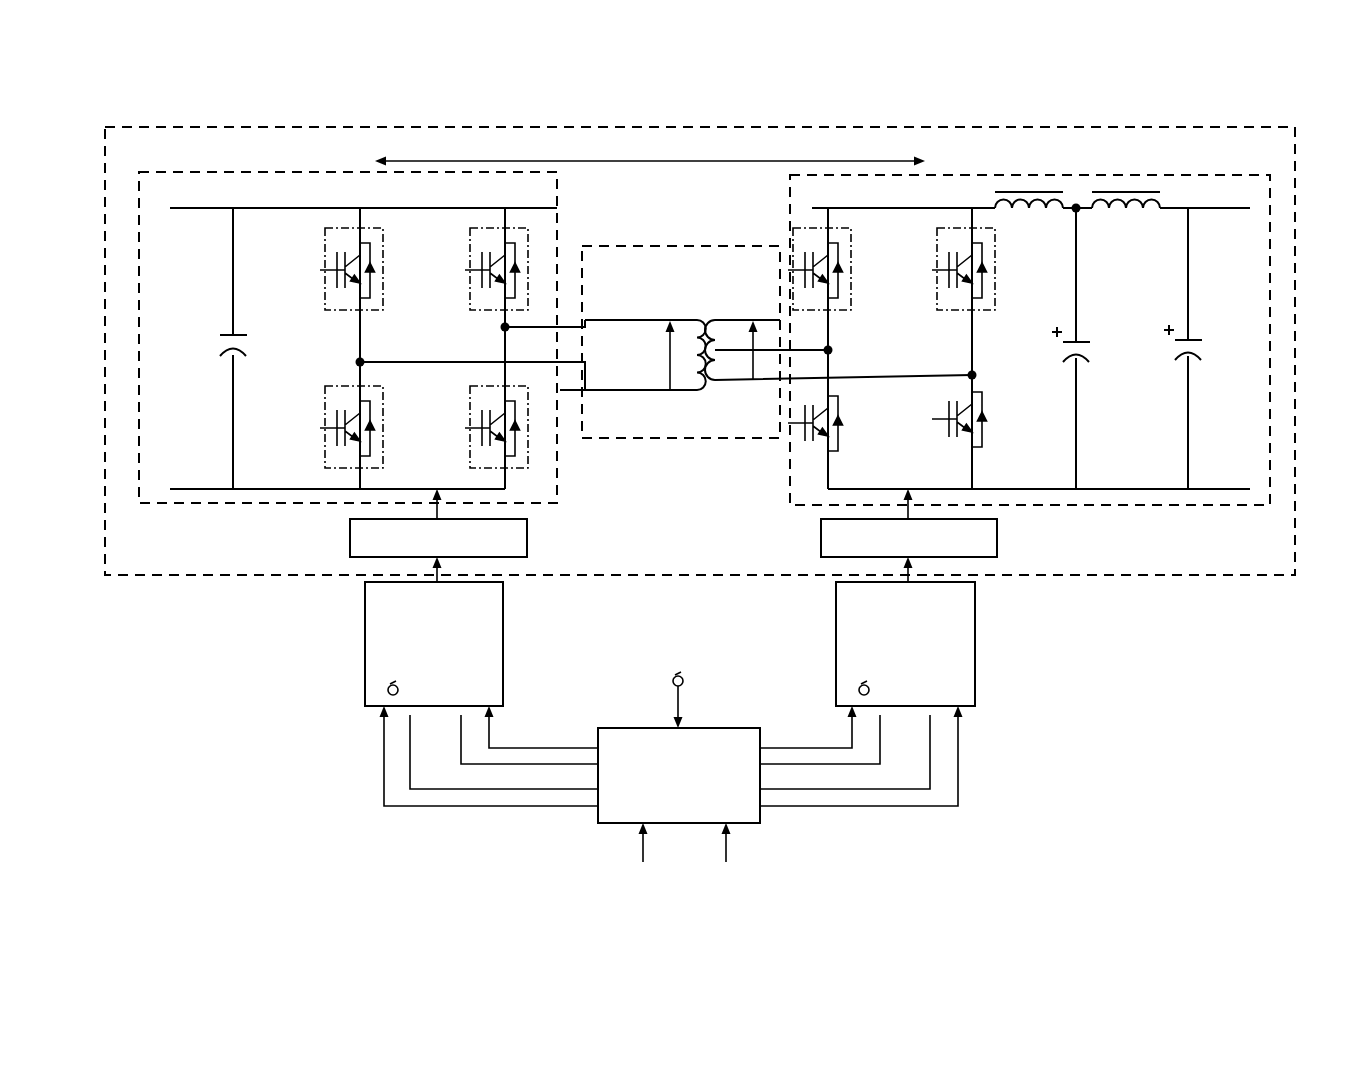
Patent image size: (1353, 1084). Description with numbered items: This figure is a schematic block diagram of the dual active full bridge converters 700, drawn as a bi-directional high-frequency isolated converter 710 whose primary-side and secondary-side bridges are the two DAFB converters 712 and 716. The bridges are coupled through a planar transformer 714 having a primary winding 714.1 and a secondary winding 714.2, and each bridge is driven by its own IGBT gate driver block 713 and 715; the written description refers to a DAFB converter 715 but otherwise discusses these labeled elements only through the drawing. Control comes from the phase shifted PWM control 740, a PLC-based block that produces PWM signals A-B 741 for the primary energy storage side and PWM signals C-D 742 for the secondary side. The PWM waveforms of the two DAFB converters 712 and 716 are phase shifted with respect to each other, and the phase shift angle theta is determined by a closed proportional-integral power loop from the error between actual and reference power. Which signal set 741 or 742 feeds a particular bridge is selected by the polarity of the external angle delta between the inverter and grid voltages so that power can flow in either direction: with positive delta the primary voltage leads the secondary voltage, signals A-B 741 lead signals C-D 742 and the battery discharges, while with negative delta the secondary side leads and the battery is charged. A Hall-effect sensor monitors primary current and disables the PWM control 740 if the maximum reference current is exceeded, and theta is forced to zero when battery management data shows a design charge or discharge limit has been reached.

The Dual Active Full Bridge (DAFB) converters 700 is at (212, 847).
The bi-directional HF isolated IGBT-based phase-shifted DC-DC converter 710 is at (280, 127).
The DAFB converter (primary energy storage side) 712 is at (202, 503).
The primary-side IGBT gate drivers 713 is at (350, 548).
The planar transformer 714 is at (697, 243).
The transformer primary winding 714.1 is at (643, 312).
The transformer secondary winding 714.2 is at (738, 312).
The DAFB converter 715 is at (992, 557).
The DAFB converter (secondary side) 716 is at (1165, 505).
The phase shifted PWM control 740 is at (753, 823).
The PWM signals A-B 741 is at (378, 624).
The PWM signals C-D 742 is at (975, 642).